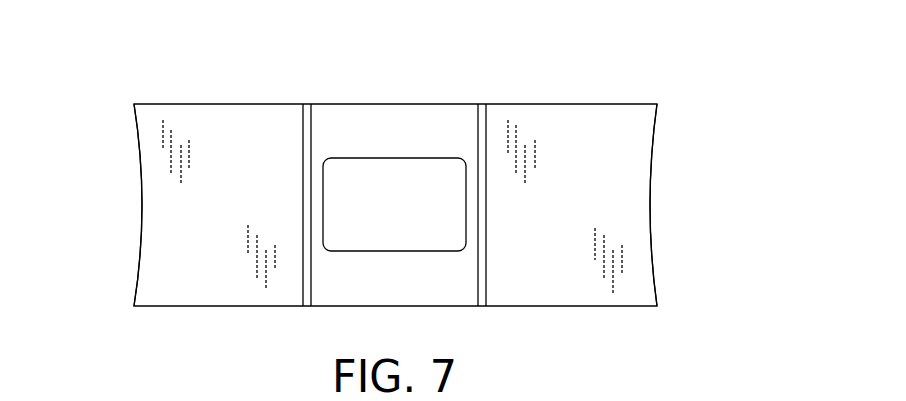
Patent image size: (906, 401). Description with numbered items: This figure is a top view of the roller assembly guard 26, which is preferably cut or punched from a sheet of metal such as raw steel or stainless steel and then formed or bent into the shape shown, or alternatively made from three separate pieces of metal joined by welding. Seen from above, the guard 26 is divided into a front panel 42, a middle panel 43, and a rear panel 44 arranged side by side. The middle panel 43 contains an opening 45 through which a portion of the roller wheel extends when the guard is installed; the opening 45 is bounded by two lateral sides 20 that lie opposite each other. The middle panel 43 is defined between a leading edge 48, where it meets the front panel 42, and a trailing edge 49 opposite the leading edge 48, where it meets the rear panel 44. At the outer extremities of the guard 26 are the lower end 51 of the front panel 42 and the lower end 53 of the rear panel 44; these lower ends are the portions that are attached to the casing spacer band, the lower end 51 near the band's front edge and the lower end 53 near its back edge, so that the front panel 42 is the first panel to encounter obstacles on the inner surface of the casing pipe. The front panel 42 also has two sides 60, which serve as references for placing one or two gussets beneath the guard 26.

The guard 26 is at (702, 130).
The front panel 42 is at (578, 213).
The middle panel 43 is at (407, 143).
The rear panel 44 is at (235, 213).
The opening 45 is at (407, 213).
The leading edge 48 is at (482, 305).
The trailing edge 49 is at (308, 104).
The lower end of front panel 51 is at (650, 228).
The lower end of rear panel 53 is at (140, 196).
The side of front panel 60 is at (586, 104).
The lateral side 20 is at (360, 158).